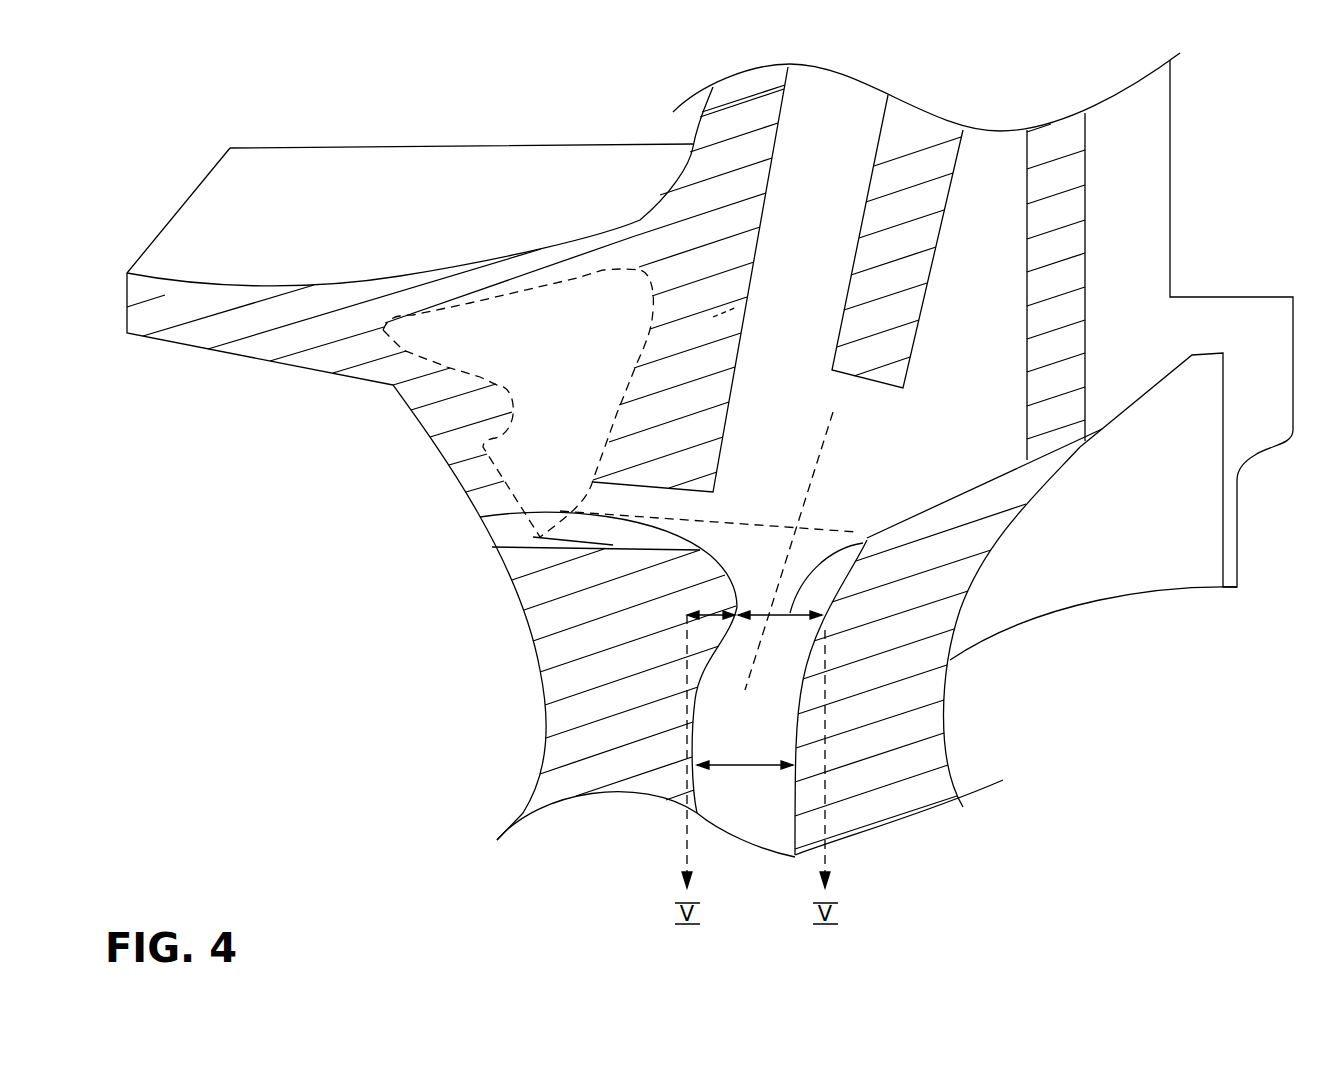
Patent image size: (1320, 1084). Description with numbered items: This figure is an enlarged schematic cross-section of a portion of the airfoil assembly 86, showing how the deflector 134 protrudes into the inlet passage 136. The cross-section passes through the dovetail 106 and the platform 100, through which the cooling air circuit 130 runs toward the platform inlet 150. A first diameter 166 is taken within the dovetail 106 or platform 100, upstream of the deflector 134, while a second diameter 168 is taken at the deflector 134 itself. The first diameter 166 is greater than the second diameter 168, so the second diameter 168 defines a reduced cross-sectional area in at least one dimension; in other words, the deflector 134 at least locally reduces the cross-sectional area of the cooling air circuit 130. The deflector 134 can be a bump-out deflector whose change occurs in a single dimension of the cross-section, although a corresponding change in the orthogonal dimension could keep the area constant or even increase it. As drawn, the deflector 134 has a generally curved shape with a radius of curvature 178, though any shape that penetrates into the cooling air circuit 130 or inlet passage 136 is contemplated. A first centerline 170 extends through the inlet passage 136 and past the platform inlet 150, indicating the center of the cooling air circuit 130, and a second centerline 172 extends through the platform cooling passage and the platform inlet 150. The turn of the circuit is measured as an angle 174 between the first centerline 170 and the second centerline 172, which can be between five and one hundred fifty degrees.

The airfoil assembly 86 is at (1284, 70).
The platform 100 is at (1175, 231).
The dovetail 106 is at (952, 765).
The cooling air circuit 130 is at (943, 435).
The deflector 134 is at (822, 618).
The inlet passage 136 is at (740, 637).
The platform inlet 150 is at (480, 517).
The first diameter 166 is at (790, 766).
The second diameter 168 is at (870, 540).
The first centerline 170 is at (753, 663).
The second centerline 172 is at (647, 513).
The angle 174 is at (803, 500).
The radius of curvature 178 is at (710, 620).